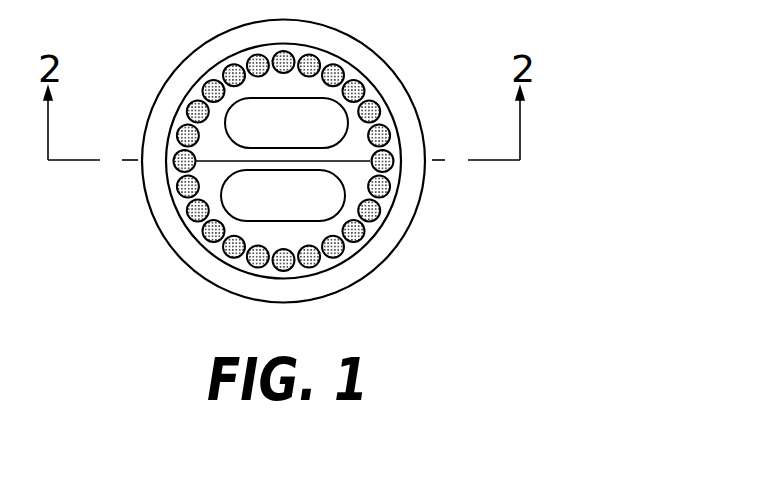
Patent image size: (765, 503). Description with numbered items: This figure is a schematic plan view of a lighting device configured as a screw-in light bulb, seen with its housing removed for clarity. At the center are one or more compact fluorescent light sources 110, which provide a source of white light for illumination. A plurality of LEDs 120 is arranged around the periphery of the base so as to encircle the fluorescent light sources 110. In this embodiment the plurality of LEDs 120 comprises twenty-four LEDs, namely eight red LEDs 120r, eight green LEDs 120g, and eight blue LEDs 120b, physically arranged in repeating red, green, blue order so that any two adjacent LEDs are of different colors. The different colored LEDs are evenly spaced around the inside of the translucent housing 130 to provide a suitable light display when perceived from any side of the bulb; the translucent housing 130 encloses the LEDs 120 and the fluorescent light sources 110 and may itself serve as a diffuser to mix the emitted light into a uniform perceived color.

The compact fluorescent light source 110 is at (320, 117).
The LEDs 120 is at (552, 270).
The blue LEDs 120b is at (381, 204).
The green LEDs 120g is at (365, 227).
The red LEDs 120r is at (344, 240).
The translucent housing 130 is at (142, 177).